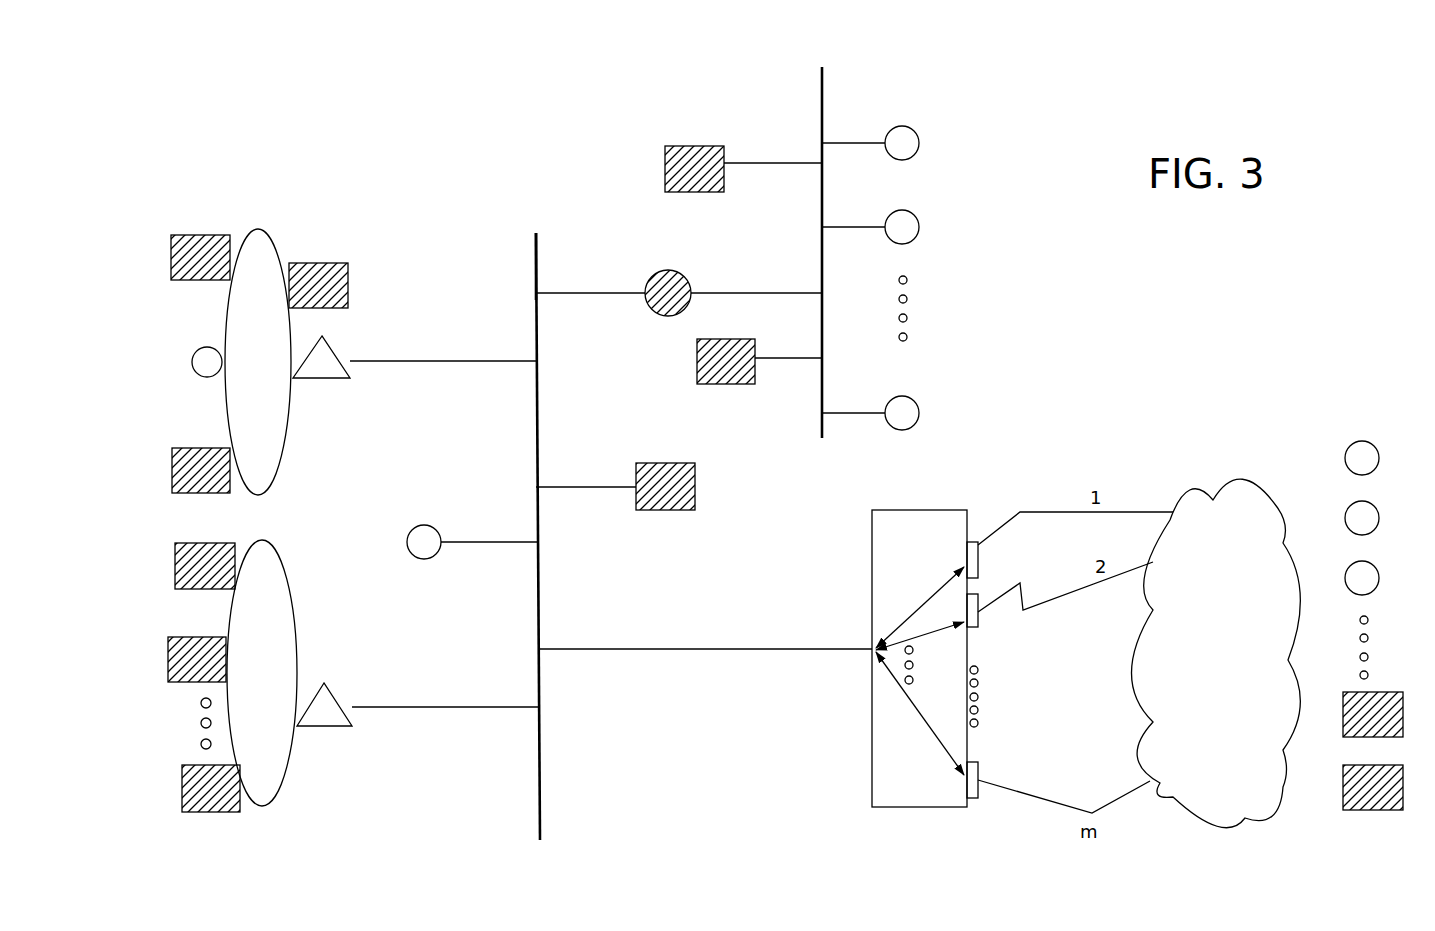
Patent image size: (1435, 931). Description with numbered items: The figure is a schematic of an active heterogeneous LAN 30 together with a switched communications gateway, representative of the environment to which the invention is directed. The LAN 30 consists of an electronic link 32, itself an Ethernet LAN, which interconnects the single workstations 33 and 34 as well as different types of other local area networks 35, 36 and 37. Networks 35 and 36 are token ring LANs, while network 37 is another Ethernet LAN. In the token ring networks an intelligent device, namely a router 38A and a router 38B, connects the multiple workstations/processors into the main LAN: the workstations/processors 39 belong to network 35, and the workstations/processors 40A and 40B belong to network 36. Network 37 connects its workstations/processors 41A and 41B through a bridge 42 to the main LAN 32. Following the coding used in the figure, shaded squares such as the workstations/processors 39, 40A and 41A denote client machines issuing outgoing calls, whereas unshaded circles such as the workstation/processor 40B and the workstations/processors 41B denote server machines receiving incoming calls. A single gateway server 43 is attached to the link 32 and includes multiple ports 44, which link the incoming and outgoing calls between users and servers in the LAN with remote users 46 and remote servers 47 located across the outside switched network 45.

The LAN 30 is at (528, 254).
The electronic link 32 is at (540, 790).
The single workstation 33 is at (435, 531).
The single workstation 34 is at (670, 463).
The token ring LAN 35 is at (287, 560).
The token ring LAN 36 is at (282, 236).
The Ethernet LAN 37 is at (828, 82).
The router 38A is at (336, 355).
The router 38B is at (338, 704).
The workstations/processors 39 is at (196, 543).
The workstations/processors 40A is at (190, 235).
The workstation/processor 40B is at (193, 360).
The workstations/processors 41A is at (697, 146).
The workstations/processors 41B is at (914, 132).
The bridge 42 is at (683, 272).
The gateway server 43 is at (872, 702).
The ports 44 is at (978, 543).
The switched network 45 is at (1275, 506).
The remote users 46 is at (1395, 712).
The remote servers 47 is at (1376, 460).